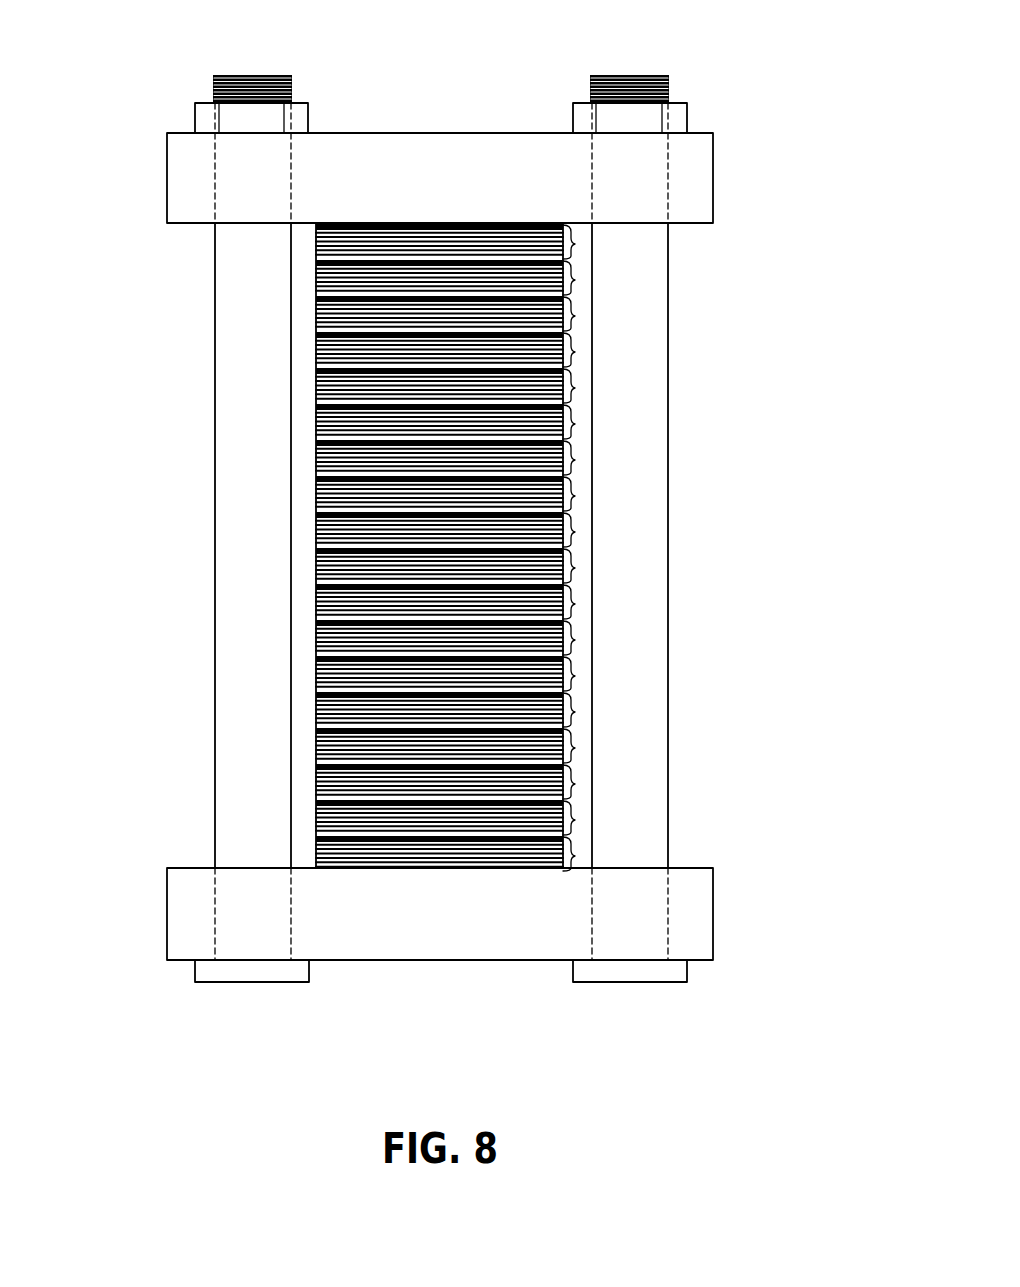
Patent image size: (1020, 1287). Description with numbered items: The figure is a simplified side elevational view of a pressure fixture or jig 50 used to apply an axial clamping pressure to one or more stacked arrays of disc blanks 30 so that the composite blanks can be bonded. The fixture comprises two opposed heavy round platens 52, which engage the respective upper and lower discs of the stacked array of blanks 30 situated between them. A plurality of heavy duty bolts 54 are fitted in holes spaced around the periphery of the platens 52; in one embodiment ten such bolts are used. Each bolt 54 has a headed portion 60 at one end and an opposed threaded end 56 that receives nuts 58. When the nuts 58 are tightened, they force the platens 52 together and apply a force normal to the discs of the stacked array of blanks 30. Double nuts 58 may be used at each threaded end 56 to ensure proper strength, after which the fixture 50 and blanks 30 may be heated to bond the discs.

The stacked array of blanks 30 is at (575, 244).
The pressure fixture 50 is at (825, 162).
The platen 52 is at (714, 185).
The bolt 54 is at (214, 454).
The threaded end 56 is at (213, 85).
The nut 58 is at (303, 120).
The headed portion 60 is at (260, 983).